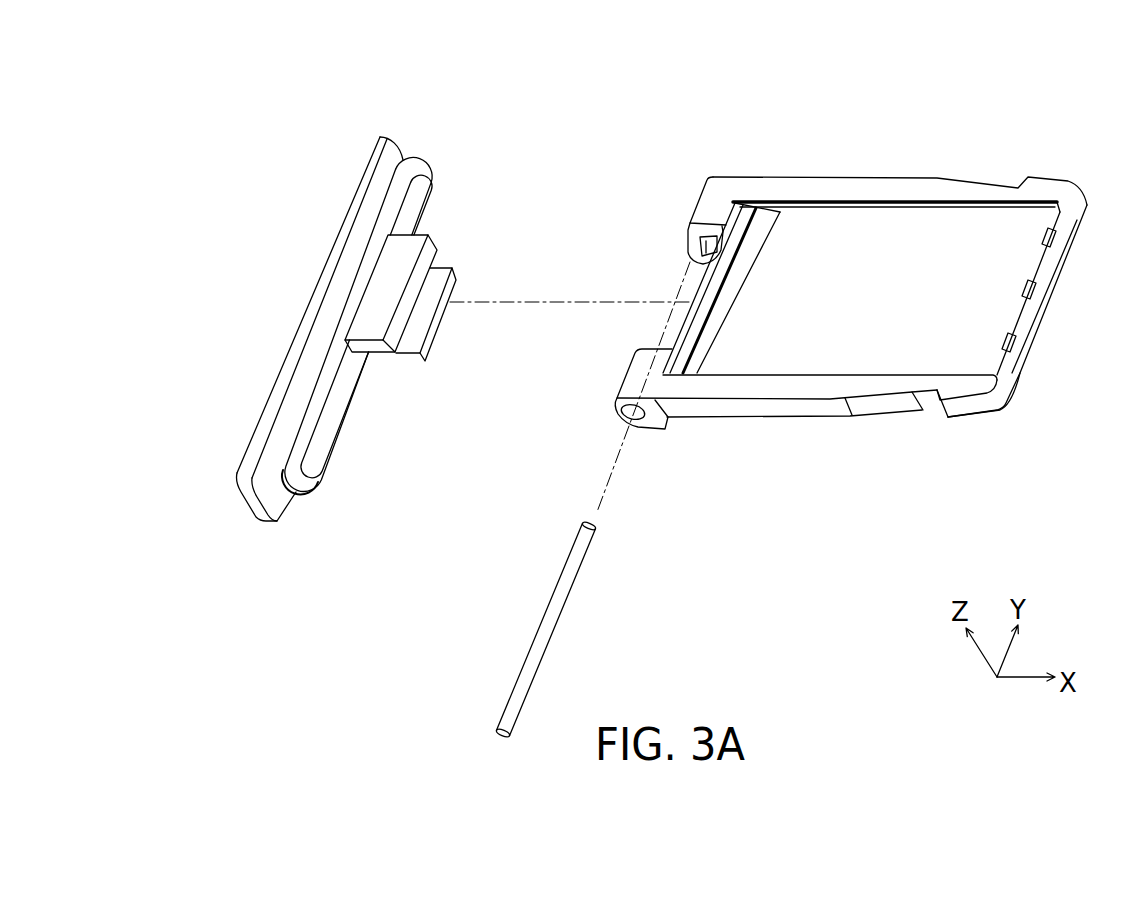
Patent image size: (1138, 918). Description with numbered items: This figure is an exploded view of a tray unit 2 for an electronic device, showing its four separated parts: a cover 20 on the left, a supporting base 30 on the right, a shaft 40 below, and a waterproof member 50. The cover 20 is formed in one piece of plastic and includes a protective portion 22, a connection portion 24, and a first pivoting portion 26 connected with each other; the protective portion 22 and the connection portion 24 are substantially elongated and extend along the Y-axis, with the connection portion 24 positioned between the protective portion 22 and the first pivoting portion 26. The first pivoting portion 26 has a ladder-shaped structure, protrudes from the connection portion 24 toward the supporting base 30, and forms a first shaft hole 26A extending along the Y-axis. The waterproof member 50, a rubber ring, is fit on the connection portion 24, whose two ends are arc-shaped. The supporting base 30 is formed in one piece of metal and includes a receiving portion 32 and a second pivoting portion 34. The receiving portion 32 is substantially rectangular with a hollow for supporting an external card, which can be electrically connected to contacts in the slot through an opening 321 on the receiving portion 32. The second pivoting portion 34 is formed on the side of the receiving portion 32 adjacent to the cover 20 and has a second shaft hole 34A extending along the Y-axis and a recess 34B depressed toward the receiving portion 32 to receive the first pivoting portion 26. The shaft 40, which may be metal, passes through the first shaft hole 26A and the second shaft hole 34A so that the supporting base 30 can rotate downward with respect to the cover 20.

The tray unit 2 is at (205, 92).
The cover 20 is at (410, 128).
The protective portion 22 is at (308, 292).
The connection portion 24 is at (320, 430).
The first pivoting portion 26 is at (387, 290).
The first shaft hole 26A is at (368, 358).
The waterproof member 50 is at (303, 493).
The supporting base 30 is at (1085, 160).
The receiving portion 32 is at (972, 190).
The opening 321 is at (838, 240).
The second pivoting portion 34 is at (708, 213).
The second shaft hole 34A is at (622, 410).
The recess 34B is at (680, 290).
The shaft 40 is at (523, 598).